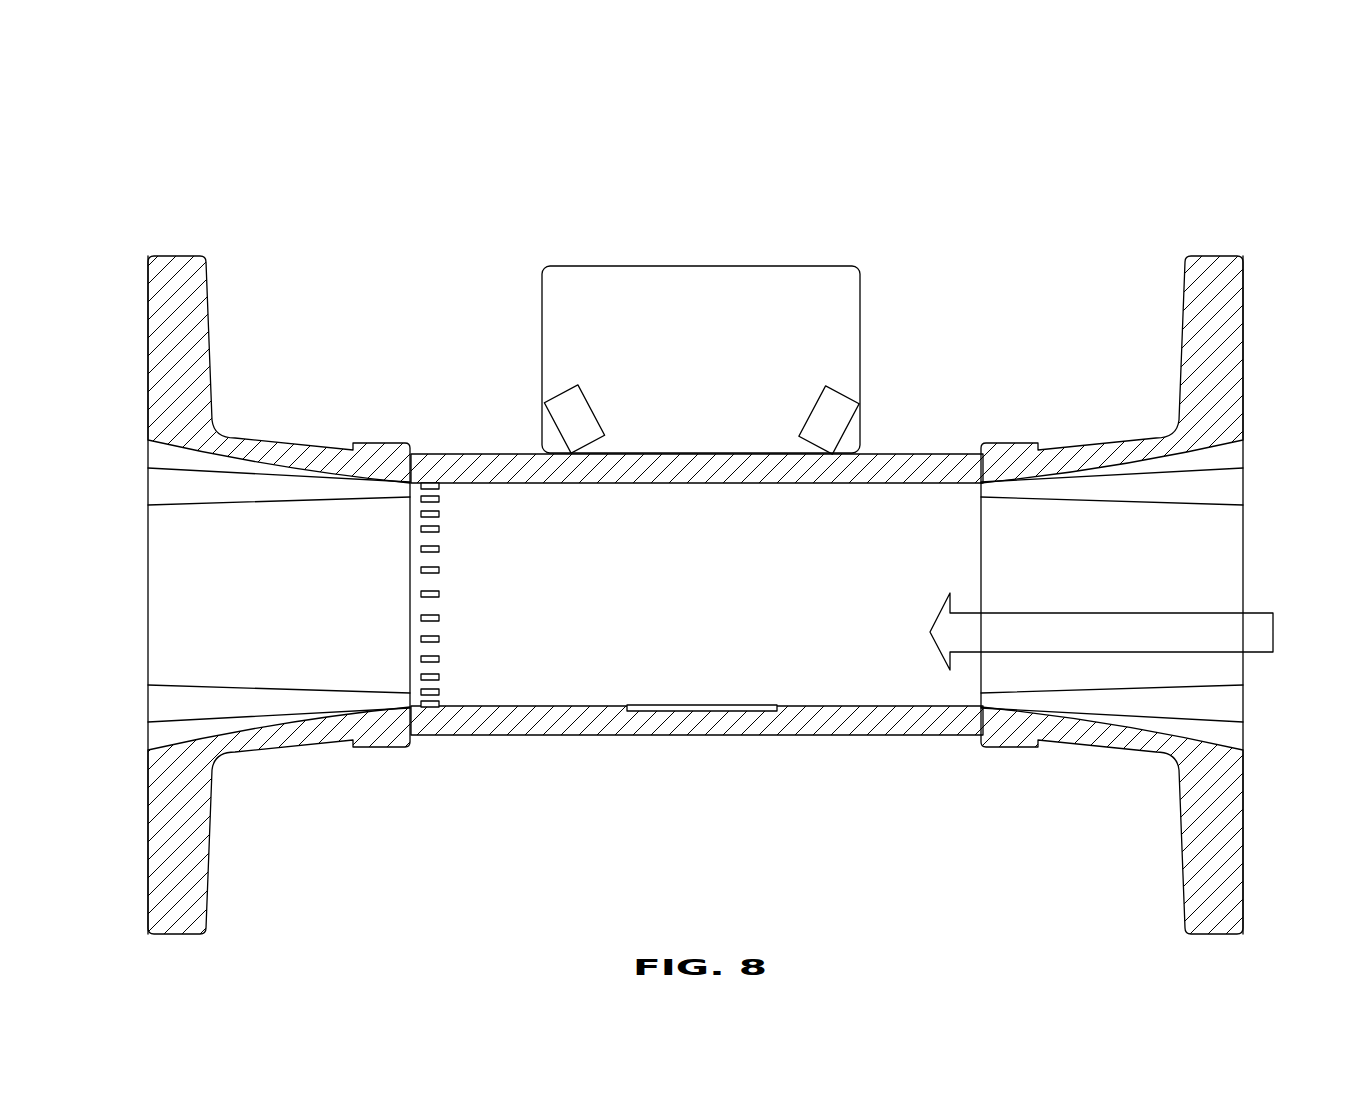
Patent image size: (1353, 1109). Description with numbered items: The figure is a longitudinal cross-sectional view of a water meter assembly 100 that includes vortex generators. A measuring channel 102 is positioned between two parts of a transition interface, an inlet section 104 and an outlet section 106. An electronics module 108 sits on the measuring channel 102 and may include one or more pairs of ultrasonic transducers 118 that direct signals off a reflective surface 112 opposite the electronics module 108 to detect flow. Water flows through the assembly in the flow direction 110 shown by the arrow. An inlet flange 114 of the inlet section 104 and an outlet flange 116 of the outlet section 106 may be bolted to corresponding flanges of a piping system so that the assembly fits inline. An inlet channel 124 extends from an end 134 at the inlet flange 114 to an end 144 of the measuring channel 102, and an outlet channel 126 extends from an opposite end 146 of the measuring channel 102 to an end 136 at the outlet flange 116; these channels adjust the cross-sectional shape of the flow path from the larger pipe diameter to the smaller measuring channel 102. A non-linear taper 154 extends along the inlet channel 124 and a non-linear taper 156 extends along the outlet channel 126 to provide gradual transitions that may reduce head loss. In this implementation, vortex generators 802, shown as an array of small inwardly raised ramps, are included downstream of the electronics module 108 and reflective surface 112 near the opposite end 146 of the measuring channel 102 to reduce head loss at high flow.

The water meter assembly 100 is at (212, 119).
The measuring channel 102 is at (718, 576).
The inlet section 104 is at (1099, 360).
The outlet section 106 is at (288, 359).
The electronics module 108 is at (718, 370).
The flow direction 110 is at (1101, 631).
The reflective surface 112 is at (667, 712).
The inlet flange 114 is at (1226, 256).
The outlet flange 116 is at (170, 256).
The ultrasonic transducers 118 is at (548, 418).
The inlet channel 124 is at (1245, 593).
The outlet channel 126 is at (147, 611).
The end 134 is at (1245, 732).
The end 136 is at (148, 730).
The end 144 is at (981, 683).
The opposite end 146 is at (410, 632).
The non-linear taper 154 is at (1208, 462).
The non-linear taper 156 is at (192, 462).
The vortex generators 802 is at (440, 596).